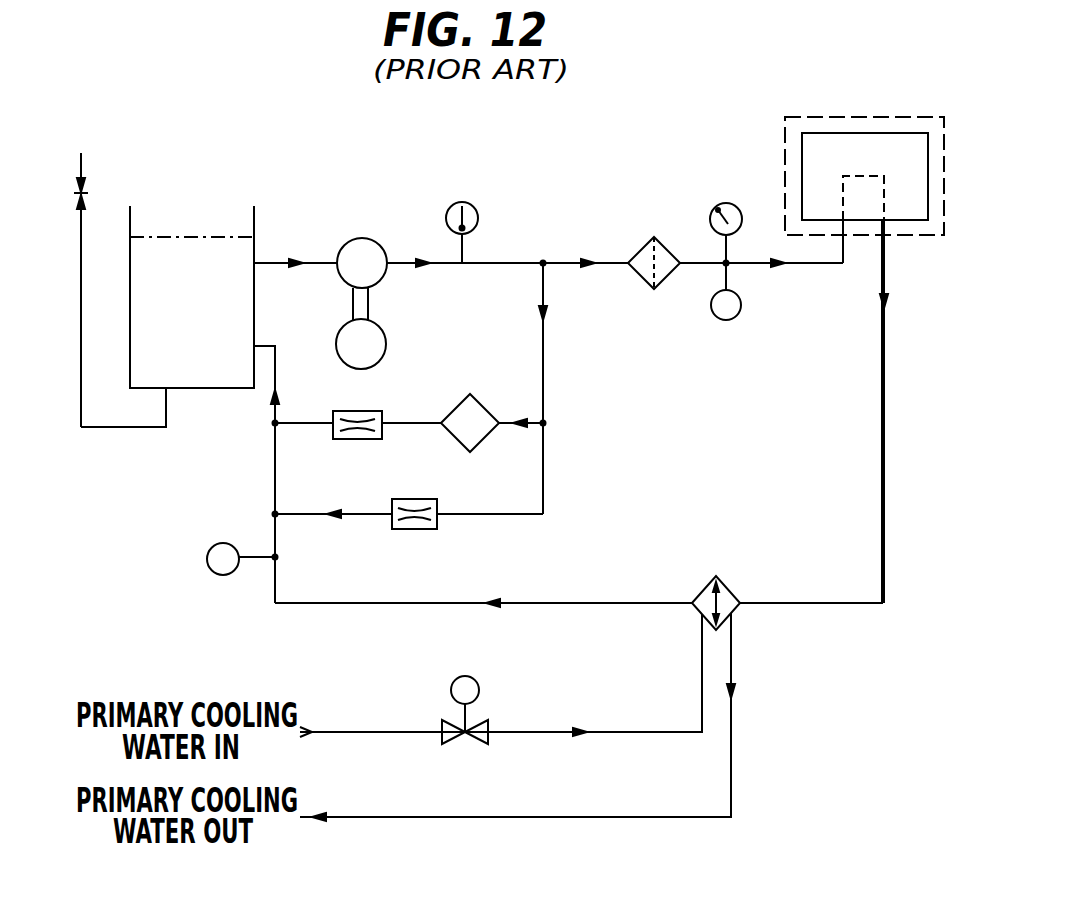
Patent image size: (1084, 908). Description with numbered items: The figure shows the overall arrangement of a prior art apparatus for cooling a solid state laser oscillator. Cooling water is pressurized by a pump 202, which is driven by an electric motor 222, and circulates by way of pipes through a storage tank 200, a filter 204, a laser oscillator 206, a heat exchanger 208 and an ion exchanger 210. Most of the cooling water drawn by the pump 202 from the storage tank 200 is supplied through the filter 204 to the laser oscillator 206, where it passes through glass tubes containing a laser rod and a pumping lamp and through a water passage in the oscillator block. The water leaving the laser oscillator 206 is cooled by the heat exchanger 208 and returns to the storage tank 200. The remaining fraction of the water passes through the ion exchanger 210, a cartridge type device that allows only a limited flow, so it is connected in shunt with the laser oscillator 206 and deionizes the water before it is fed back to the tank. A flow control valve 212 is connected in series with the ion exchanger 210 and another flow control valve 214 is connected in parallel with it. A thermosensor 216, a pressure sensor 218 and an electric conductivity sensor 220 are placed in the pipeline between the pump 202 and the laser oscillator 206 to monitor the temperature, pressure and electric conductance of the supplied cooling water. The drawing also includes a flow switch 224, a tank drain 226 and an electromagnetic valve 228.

The storage tank 200 is at (256, 220).
The pump 202 is at (363, 238).
The filter 204 is at (643, 242).
The laser oscillator 206 is at (840, 116).
The heat exchanger 208 is at (740, 595).
The ion exchanger 210 is at (482, 410).
The flow control valve 212 is at (370, 411).
The flow control valve 214 is at (430, 499).
The thermosensor 216 is at (470, 204).
The pressure sensor 218 is at (733, 177).
The electric conductivity sensor 220 is at (735, 316).
The electric motor 222 is at (386, 336).
The flow switch 224 is at (213, 548).
The tank drain 226 is at (92, 187).
The electromagnetic valve 228 is at (477, 722).